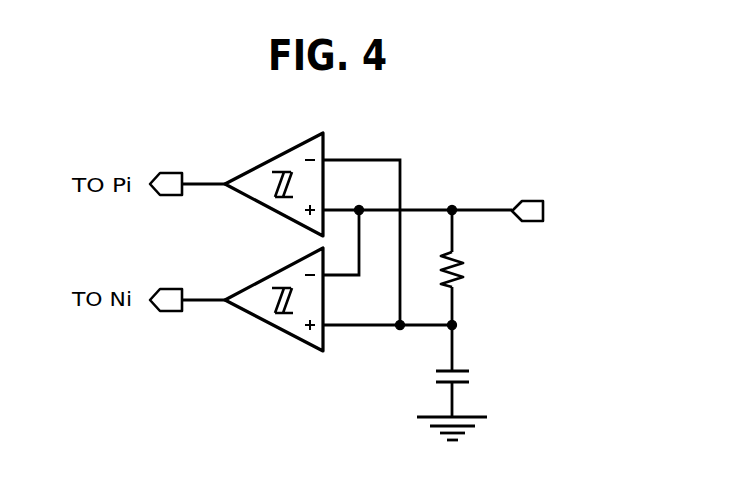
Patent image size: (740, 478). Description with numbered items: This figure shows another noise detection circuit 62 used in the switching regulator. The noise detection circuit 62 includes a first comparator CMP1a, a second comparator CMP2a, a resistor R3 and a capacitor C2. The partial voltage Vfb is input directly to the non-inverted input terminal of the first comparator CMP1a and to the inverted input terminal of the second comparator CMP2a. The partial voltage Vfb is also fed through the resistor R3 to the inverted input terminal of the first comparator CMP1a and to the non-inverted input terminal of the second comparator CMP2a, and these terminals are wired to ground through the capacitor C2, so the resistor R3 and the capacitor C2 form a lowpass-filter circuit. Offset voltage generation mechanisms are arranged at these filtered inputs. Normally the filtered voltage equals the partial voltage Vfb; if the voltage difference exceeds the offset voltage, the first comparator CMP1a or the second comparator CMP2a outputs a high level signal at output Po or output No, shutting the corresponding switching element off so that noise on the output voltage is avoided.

The noise detection circuit 62 is at (515, 139).
The first comparator CMP1a is at (281, 124).
The second comparator CMP2a is at (252, 321).
The positive output terminal Po is at (166, 175).
The negative output terminal No is at (166, 291).
The partial voltage Vfb is at (550, 213).
The resistor R3 is at (470, 269).
The capacitor C2 is at (471, 380).